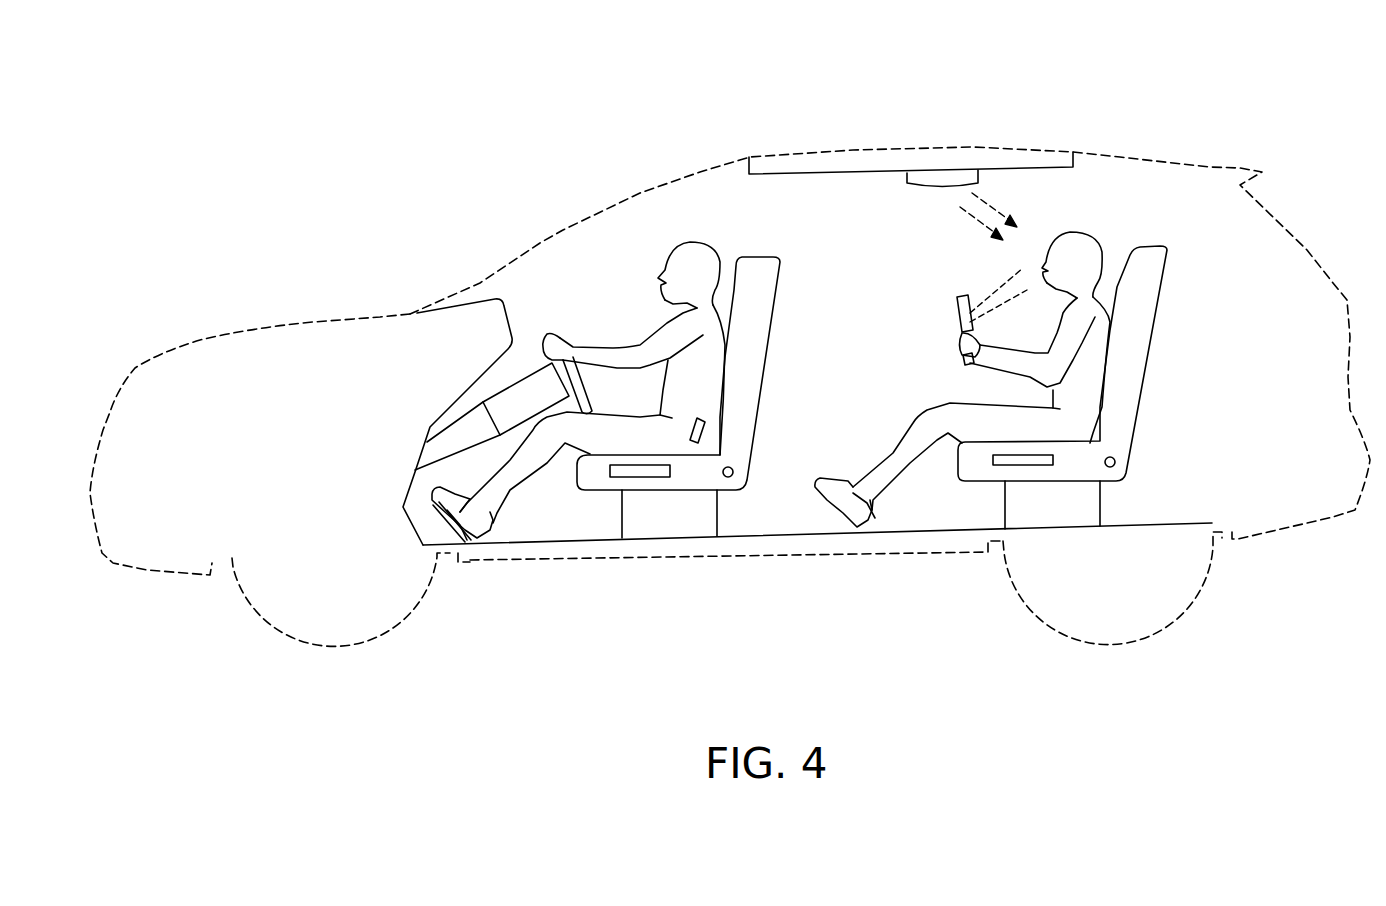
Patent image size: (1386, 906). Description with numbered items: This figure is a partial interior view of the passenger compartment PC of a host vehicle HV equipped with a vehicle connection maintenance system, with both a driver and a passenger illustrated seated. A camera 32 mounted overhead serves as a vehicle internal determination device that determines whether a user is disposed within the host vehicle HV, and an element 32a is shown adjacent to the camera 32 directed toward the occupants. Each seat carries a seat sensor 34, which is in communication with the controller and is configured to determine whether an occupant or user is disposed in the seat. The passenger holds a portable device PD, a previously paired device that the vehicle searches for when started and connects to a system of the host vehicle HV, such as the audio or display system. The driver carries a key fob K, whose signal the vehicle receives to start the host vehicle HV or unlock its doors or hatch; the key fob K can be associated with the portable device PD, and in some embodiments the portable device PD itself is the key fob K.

The host vehicle HV is at (1210, 167).
The passenger compartment PC is at (693, 202).
The camera 32 is at (915, 188).
The sensing direction of sensor 32a is at (943, 188).
The seat sensor 34 is at (643, 478).
The key fob K is at (690, 443).
The portable device PD is at (957, 312).